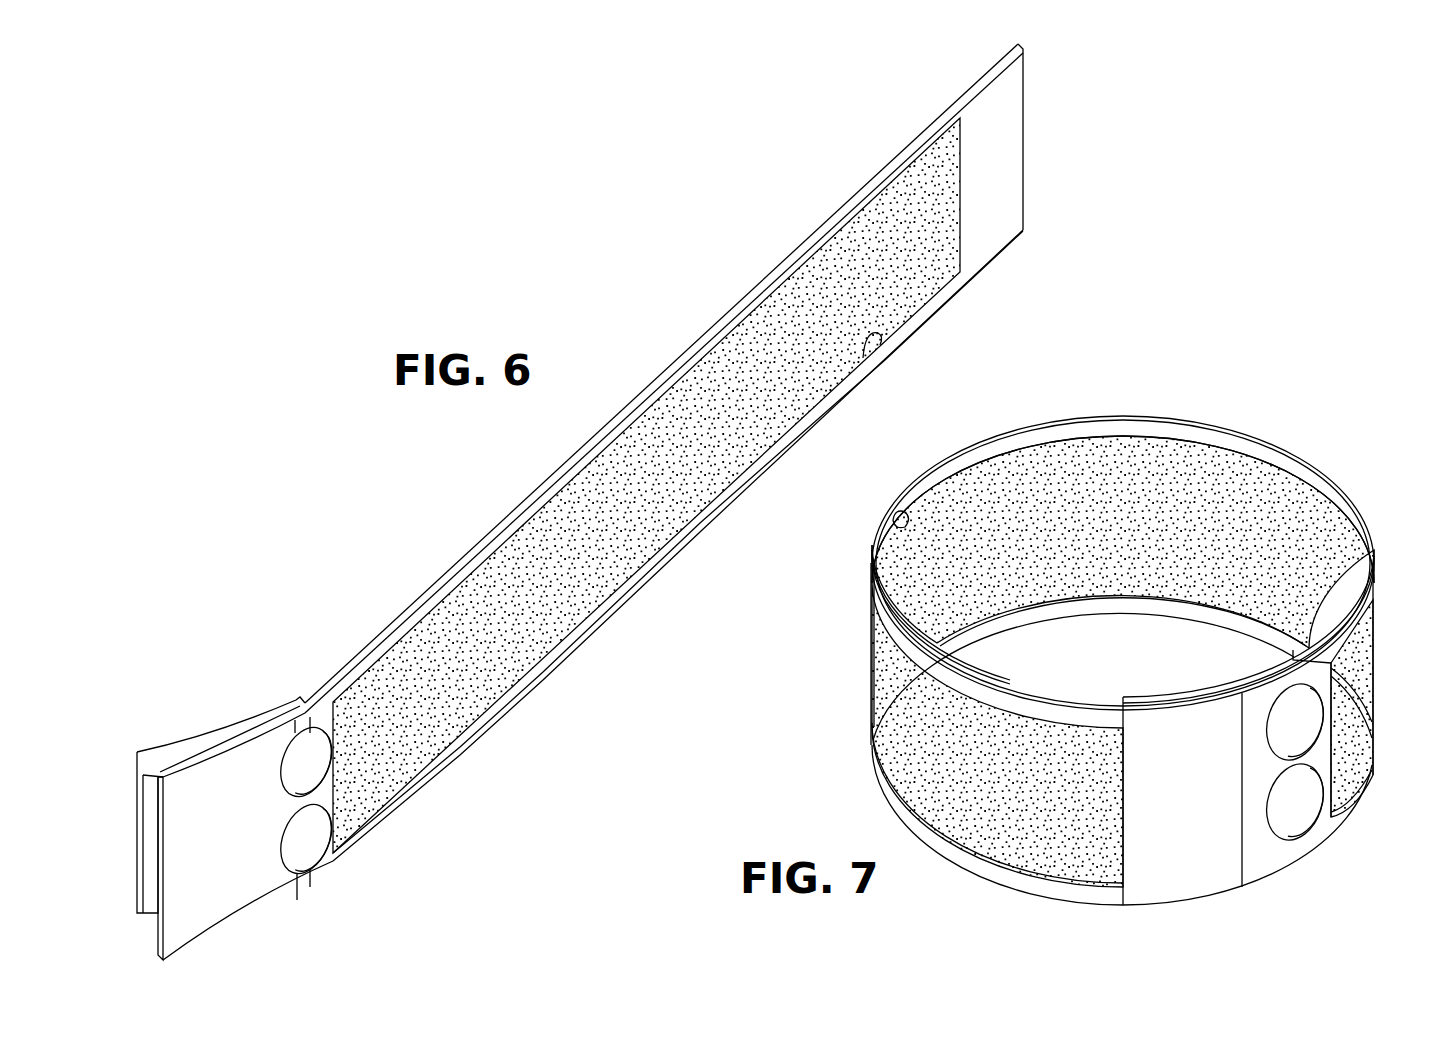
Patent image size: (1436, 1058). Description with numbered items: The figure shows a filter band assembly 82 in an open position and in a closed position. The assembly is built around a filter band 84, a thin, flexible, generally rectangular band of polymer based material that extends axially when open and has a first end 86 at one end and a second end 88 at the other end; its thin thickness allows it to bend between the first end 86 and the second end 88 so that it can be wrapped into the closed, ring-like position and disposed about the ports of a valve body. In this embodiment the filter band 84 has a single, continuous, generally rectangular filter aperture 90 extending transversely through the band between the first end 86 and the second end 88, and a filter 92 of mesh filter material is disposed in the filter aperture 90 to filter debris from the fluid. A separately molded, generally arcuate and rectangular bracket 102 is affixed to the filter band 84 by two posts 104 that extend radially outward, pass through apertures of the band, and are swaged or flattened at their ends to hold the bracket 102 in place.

In FIG. 6, the filter band assembly 82 is at (707, 452).
In FIG. 7, the filter band assembly 82 is at (1111, 645).
In FIG. 6, the filter band 84 is at (880, 177).
In FIG. 7, the filter band 84 is at (1132, 420).
In FIG. 6, the first end 86 is at (222, 783).
In FIG. 7, the first end 86 is at (1275, 857).
In FIG. 6, the second end 88 is at (1002, 208).
In FIG. 7, the second end 88 is at (1190, 868).
In FIG. 6, the filter aperture 90 is at (875, 358).
In FIG. 7, the filter aperture 90 is at (893, 519).
In FIG. 6, the filter 92 is at (912, 275).
In FIG. 7, the filter 92 is at (900, 567).
In FIG. 6, the bracket 102 is at (163, 745).
In FIG. 7, the bracket 102 is at (1248, 670).
In FIG. 6, the post 104 is at (302, 752).
In FIG. 7, the post 104 is at (1305, 817).